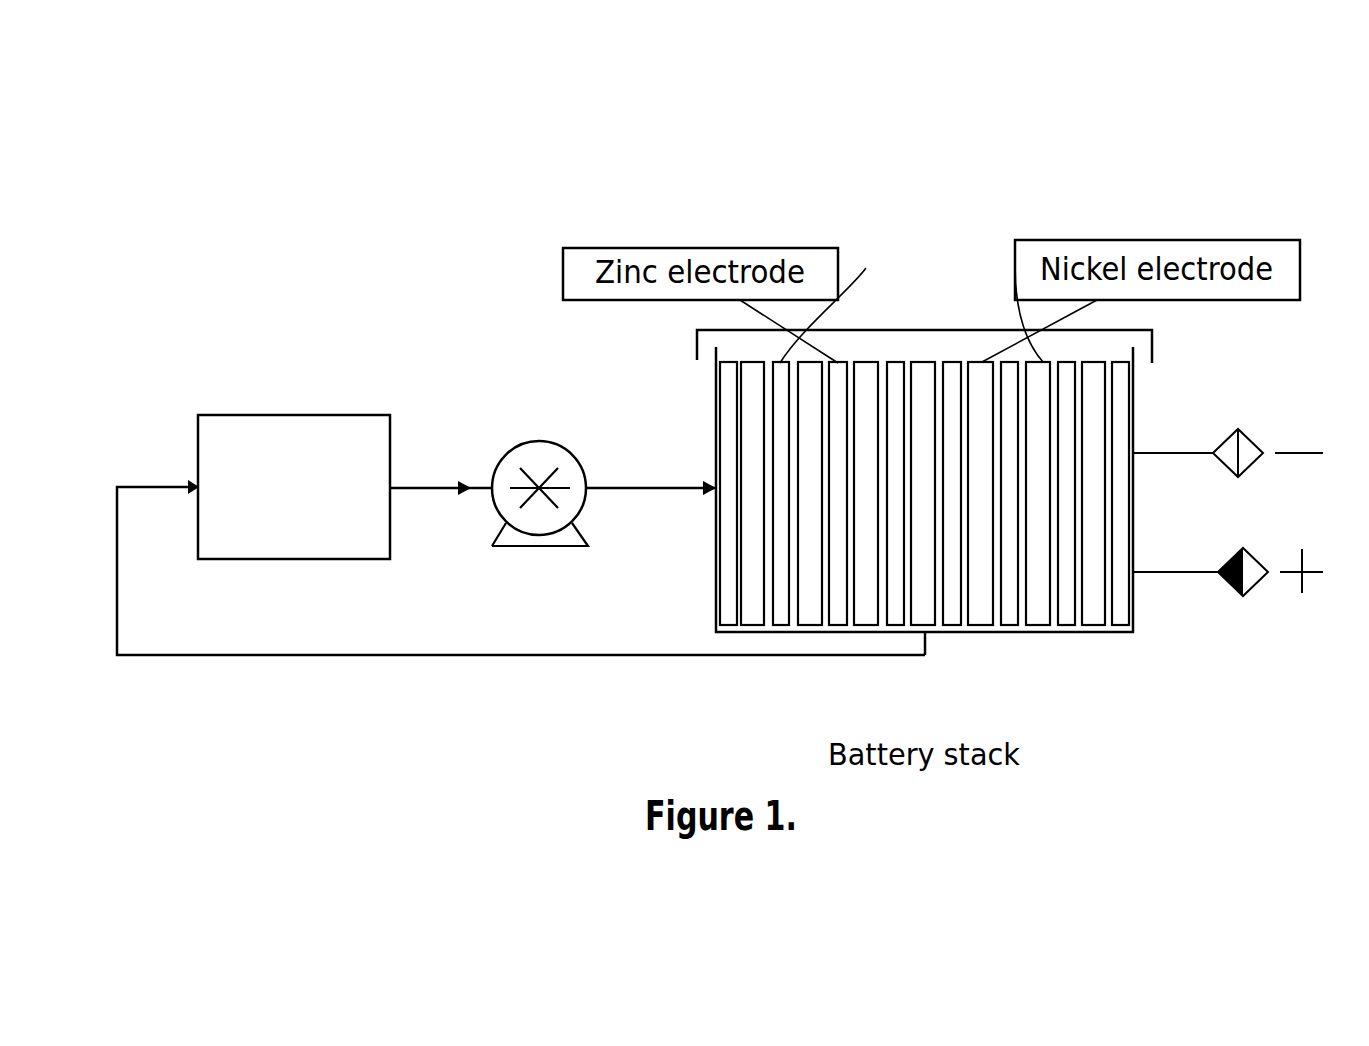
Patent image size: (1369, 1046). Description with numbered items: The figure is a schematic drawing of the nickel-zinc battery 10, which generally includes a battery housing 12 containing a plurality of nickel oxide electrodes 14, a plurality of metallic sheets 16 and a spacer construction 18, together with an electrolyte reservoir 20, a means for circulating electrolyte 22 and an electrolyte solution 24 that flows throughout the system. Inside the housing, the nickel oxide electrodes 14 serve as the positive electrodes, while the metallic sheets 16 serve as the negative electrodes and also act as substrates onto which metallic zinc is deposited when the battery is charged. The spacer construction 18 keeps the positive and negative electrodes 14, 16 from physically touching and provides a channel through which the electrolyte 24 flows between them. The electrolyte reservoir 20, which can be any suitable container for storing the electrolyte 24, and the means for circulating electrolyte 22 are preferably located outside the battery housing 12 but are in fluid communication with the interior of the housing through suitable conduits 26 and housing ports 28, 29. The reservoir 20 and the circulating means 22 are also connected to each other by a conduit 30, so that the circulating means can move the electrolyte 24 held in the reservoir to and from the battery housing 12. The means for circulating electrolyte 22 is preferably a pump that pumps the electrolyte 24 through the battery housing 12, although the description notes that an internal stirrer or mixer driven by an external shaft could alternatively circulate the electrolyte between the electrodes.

The nickel-zinc battery 10 is at (406, 159).
The battery housing 12 is at (1137, 620).
The nickel oxide electrodes 14 is at (987, 360).
The metallic sheets 16 is at (855, 363).
The spacer construction 18 is at (963, 370).
The electrolyte reservoir 20 is at (232, 420).
The means for circulating electrolyte 22 is at (525, 441).
The electrolyte solution 24 is at (1023, 627).
The conduits 26 is at (417, 658).
The housing port 28 is at (715, 480).
The housing port 29 is at (927, 637).
The conduit 30 is at (424, 482).